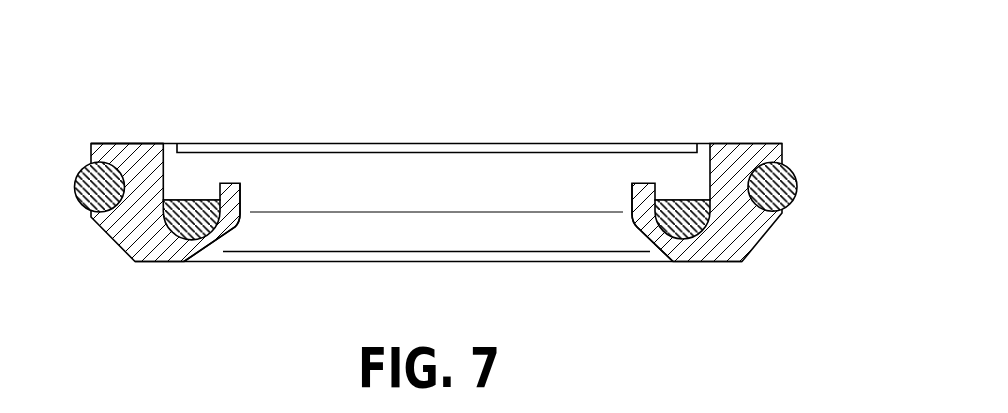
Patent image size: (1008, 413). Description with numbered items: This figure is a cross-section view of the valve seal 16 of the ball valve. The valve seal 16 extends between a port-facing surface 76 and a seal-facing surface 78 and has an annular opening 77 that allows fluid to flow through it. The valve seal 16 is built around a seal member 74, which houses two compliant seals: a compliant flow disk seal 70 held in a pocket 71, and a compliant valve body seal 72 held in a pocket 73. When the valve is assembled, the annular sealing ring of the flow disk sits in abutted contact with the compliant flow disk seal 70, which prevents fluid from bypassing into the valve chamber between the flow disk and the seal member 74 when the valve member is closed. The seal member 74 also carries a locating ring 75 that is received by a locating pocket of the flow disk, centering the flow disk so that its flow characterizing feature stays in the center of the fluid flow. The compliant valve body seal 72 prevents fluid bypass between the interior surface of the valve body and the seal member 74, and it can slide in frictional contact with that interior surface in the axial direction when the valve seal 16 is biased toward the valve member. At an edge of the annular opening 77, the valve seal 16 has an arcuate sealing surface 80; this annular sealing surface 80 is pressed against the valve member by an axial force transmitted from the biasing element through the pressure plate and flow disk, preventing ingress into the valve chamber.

The valve seal 16 is at (737, 77).
The compliant flow disk seal 70 is at (678, 200).
The pocket 71 is at (694, 232).
The compliant valve body seal 72 is at (797, 165).
The pocket 73 is at (167, 142).
The seal member 74 is at (748, 232).
The locating ring 75 is at (237, 183).
The port-facing surface 76 is at (125, 142).
The opening 77 is at (487, 195).
The seal-facing surface 78 is at (162, 262).
The arcuate sealing surface 80 is at (234, 224).